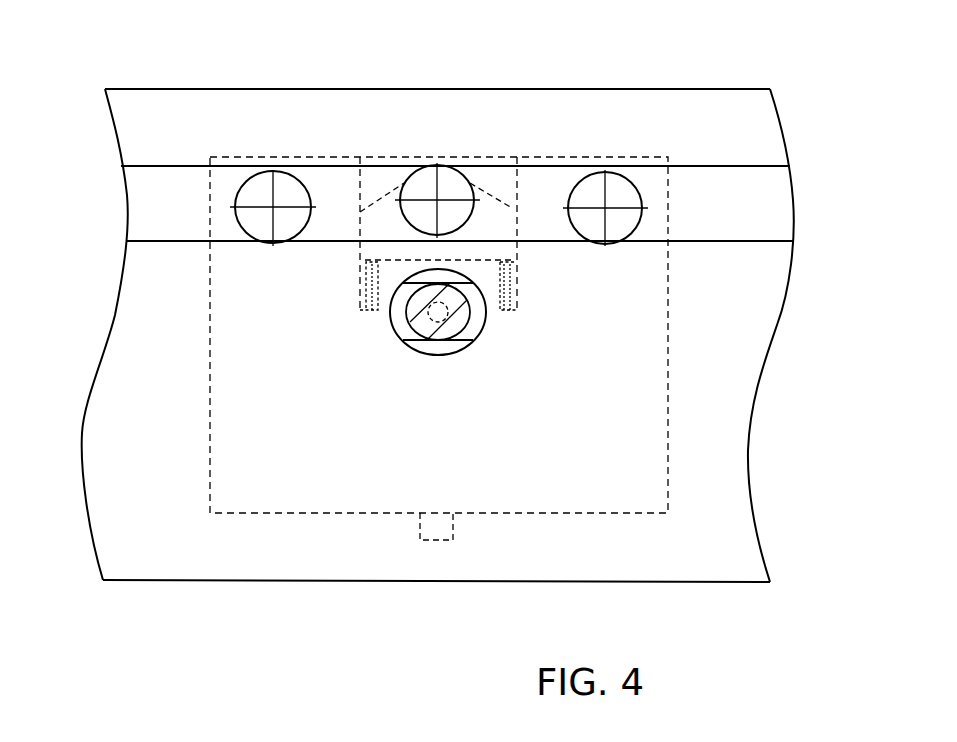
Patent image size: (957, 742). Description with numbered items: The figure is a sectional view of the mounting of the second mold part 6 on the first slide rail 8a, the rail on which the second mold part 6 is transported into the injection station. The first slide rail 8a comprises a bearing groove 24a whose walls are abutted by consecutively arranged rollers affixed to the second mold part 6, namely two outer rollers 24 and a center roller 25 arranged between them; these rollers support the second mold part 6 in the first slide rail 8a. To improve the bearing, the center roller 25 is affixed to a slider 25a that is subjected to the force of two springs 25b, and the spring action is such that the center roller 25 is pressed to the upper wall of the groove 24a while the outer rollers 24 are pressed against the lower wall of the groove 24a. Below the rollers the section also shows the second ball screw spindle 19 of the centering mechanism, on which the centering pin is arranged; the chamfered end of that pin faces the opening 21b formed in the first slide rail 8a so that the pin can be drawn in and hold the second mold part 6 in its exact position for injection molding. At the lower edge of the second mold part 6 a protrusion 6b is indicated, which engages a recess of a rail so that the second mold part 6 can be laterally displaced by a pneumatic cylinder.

The second mold part 6 is at (668, 392).
The protrusions 6b is at (430, 541).
The first slide rail 8a is at (777, 325).
The second ball screw spindle 19 is at (402, 300).
The opening 21b is at (390, 333).
The outer rollers 24 is at (288, 177).
The bearing groove 24a is at (794, 183).
The center roller 25 is at (441, 161).
The slider 25a is at (497, 189).
The springs 25b is at (518, 268).